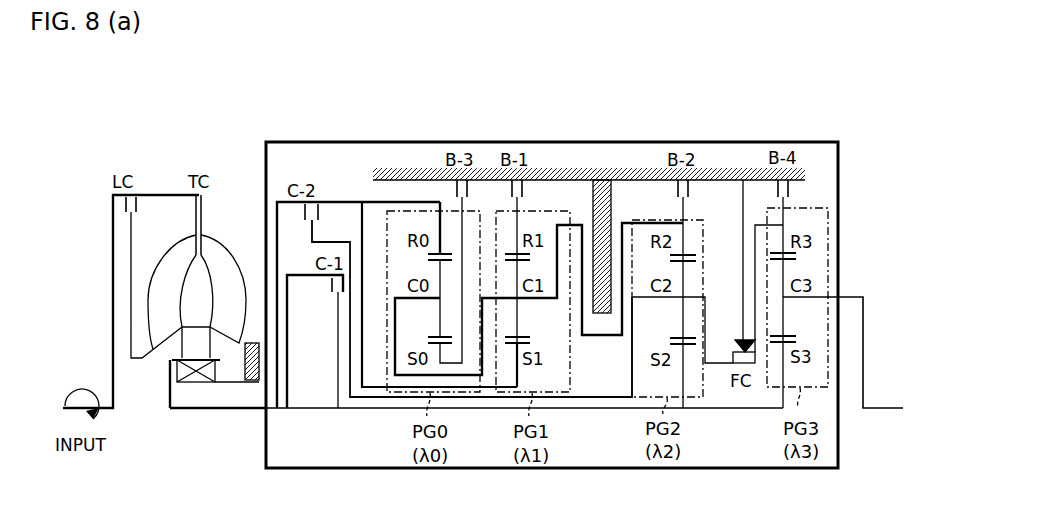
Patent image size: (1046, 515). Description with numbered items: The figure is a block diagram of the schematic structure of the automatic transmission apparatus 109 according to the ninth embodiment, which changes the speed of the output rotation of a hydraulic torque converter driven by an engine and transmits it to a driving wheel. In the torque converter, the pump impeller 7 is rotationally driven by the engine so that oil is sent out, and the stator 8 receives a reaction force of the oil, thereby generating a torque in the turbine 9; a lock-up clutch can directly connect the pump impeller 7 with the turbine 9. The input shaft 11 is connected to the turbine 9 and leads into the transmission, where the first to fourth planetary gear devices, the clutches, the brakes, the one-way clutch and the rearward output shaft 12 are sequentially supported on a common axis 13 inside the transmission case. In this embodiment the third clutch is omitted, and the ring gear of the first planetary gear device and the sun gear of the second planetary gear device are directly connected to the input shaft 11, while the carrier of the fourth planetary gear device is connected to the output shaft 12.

The automatic transmission apparatus 109 is at (586, 141).
The pump impeller 7 is at (220, 261).
The stator 8 is at (183, 339).
The turbine 9 is at (173, 259).
The input shaft 11 is at (222, 410).
The output shaft 12 is at (887, 412).
The common axis 13 is at (312, 409).